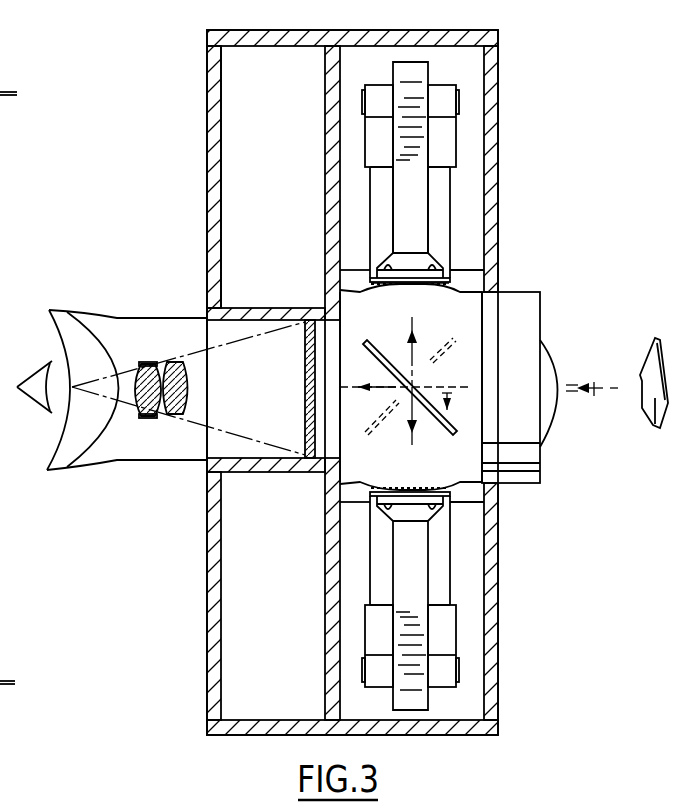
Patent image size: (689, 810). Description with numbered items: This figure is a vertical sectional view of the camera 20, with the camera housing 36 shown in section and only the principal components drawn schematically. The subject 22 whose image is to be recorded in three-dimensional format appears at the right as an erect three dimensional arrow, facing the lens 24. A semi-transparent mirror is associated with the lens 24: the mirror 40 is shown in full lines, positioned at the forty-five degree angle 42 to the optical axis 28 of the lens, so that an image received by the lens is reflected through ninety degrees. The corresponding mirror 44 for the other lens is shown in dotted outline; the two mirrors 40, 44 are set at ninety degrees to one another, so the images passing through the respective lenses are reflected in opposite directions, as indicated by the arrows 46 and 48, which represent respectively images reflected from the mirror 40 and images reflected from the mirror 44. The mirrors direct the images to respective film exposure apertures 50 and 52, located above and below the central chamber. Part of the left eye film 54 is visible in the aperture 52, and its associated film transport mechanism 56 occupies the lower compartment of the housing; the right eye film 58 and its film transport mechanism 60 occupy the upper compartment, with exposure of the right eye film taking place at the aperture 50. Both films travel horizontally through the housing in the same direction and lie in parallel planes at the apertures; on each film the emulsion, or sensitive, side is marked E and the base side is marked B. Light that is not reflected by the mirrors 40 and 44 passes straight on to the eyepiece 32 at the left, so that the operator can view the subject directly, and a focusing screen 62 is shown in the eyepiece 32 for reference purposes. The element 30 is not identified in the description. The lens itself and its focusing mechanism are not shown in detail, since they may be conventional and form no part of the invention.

The camera 20 is at (12, 76).
The subject 22 is at (650, 332).
The lens 24 is at (545, 425).
The optical axis 28 is at (597, 394).
The reflected light 30 is at (595, 380).
The eyepiece 32 is at (150, 474).
The camera housing 36 is at (207, 153).
The mirror 40 is at (452, 434).
The angle 42 is at (450, 402).
The mirror 44 is at (433, 356).
The arrow 46 is at (410, 353).
The arrow 48 is at (393, 412).
The film exposure aperture 50 is at (488, 291).
The film exposure aperture 52 is at (446, 504).
The left eye film 54 is at (376, 513).
The film transport mechanism 56 is at (350, 614).
The right eye film 58 is at (430, 262).
The film transport mechanism 60 is at (470, 135).
The focusing screen 62 is at (305, 391).
The base side B is at (438, 276).
The emulsion side E is at (372, 284).